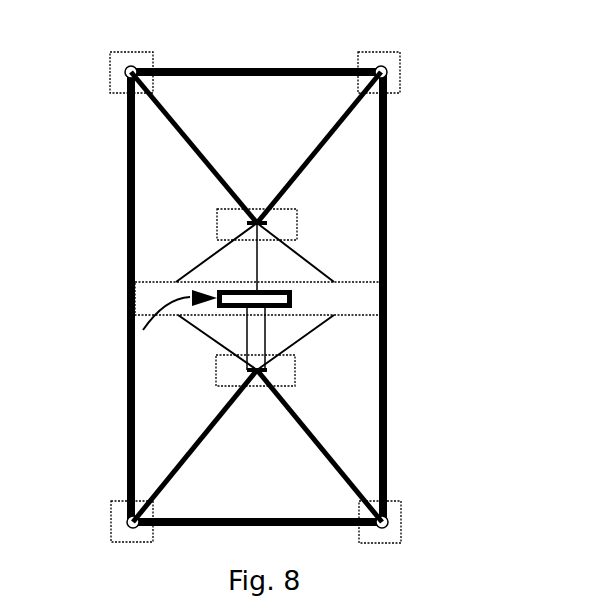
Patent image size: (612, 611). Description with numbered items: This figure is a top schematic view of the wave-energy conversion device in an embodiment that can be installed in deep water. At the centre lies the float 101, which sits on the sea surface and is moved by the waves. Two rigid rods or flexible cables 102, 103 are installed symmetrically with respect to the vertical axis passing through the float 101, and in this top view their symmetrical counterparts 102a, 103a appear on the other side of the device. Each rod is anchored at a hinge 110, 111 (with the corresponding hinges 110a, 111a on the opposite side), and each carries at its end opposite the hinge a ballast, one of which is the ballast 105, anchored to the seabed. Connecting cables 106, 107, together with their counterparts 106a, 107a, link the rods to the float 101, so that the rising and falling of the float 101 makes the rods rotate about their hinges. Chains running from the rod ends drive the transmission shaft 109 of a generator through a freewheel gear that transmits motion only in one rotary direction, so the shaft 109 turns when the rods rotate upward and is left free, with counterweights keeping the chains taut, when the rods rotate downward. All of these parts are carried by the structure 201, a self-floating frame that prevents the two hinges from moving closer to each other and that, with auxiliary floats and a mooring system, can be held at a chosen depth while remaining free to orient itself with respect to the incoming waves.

The float 101 is at (165, 281).
The rigid rod or flexible cable 102 is at (208, 168).
The upper right strut 102a is at (300, 177).
The rigid rod or flexible cable 103 is at (170, 476).
The lower right strut 103a is at (312, 437).
The ballast 105 is at (257, 205).
The connecting cable 106 is at (220, 250).
The upper right link 106a is at (300, 258).
The connecting cable 107 is at (205, 334).
The lower right link 107a is at (307, 334).
The transmission shaft of generator 109 is at (213, 330).
The hinge 110 is at (124, 514).
The lower right mount 110a is at (388, 515).
The hinge 111 is at (120, 80).
The upper right mount 111a is at (388, 80).
The structure 201 is at (392, 259).